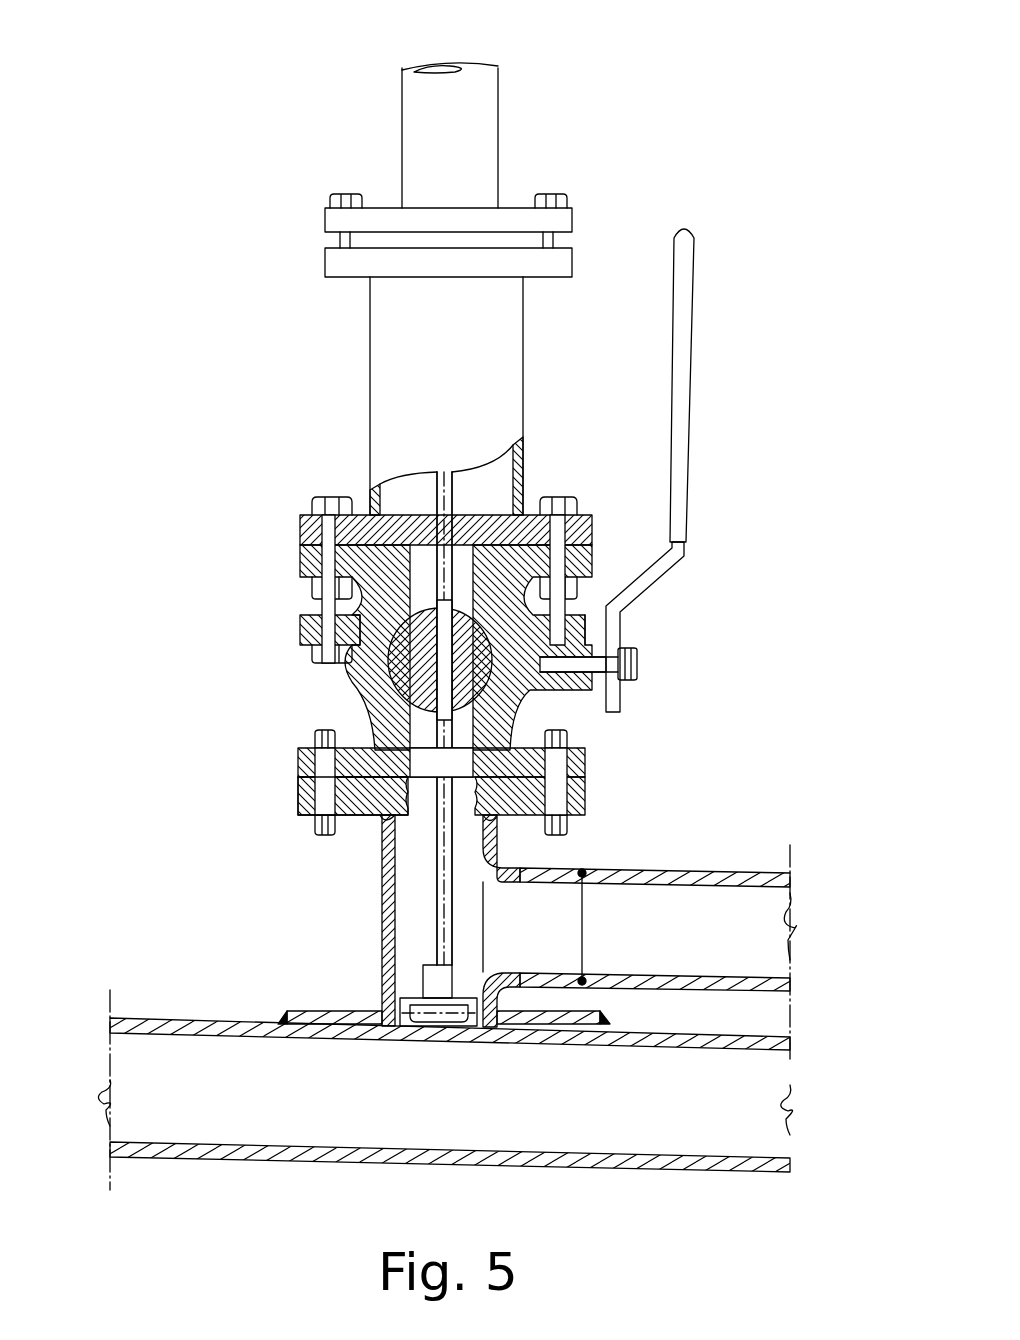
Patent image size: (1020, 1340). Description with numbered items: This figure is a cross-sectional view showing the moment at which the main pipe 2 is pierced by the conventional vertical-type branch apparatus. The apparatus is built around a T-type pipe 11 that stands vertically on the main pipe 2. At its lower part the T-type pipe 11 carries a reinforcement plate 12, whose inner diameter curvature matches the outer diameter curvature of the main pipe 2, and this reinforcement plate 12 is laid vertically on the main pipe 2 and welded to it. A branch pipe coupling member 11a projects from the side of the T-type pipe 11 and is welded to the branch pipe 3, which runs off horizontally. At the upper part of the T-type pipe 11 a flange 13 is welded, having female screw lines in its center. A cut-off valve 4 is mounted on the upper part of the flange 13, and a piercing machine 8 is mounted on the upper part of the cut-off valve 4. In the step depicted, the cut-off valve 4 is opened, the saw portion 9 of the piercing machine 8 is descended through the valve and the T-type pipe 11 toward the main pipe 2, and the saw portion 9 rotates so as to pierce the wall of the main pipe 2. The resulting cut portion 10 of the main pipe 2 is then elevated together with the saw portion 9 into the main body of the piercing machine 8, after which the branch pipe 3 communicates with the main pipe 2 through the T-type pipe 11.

The main pipe 2 is at (198, 1028).
The branch pipe 3 is at (722, 870).
The cut-off valve 4 is at (365, 675).
The piercing machine 8 is at (397, 388).
The saw portion 9 is at (385, 1000).
The cut portion 10 is at (435, 1040).
The T-type pipe 11 is at (385, 915).
The branch pipe coupling member 11a is at (562, 867).
The reinforcement plate 12 is at (305, 1012).
The flange 13 is at (585, 796).